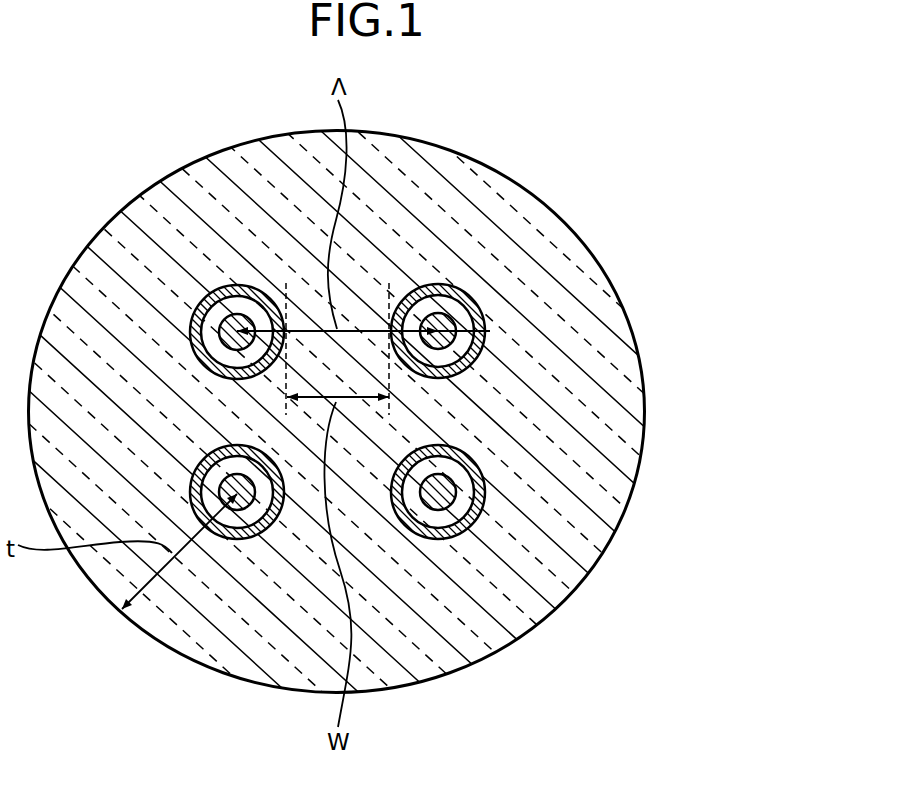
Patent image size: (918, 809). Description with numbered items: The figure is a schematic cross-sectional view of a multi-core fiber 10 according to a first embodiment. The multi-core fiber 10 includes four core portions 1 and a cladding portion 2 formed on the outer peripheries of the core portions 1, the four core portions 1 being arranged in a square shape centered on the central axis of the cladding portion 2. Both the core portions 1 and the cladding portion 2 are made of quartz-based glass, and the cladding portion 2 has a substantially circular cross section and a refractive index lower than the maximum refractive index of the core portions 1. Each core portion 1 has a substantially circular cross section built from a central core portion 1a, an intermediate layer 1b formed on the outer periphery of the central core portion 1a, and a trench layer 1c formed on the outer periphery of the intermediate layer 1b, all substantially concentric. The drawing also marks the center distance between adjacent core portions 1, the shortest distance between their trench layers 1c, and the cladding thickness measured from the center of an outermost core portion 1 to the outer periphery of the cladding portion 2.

The core portion 1 is at (446, 414).
The central core portion 1a is at (457, 334).
The intermediate layer 1b is at (470, 340).
The trench layer 1c is at (483, 360).
The cladding portion 2 is at (548, 578).
The multi-core fiber 10 is at (459, 414).